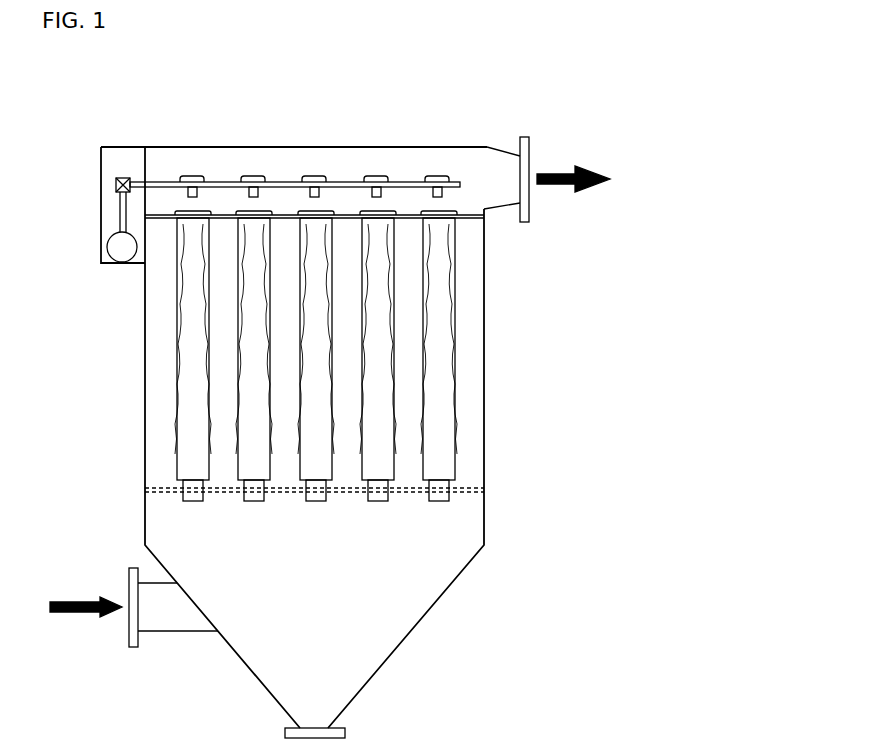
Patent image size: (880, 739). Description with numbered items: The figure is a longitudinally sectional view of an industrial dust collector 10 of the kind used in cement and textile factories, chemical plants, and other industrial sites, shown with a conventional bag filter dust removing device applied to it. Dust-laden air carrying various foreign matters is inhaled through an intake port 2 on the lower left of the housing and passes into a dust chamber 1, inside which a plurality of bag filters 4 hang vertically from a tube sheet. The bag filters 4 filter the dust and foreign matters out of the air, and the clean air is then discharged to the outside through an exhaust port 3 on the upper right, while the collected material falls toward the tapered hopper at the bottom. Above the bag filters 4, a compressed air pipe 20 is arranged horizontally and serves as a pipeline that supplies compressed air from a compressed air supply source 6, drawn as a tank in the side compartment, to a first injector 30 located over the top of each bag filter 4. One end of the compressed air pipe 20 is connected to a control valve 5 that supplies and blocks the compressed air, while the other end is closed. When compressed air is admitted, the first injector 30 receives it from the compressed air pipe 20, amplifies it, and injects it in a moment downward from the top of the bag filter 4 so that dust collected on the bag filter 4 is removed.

The dust collector 10 is at (404, 133).
The dust chamber 1 is at (470, 523).
The intake port 2 is at (128, 590).
The exhaust port 3 is at (530, 190).
The bag filter 4 is at (443, 352).
The control valve 5 is at (116, 186).
The compressed air supply source 6 is at (117, 253).
The compressed air pipe 20 is at (221, 182).
The first injector 30 is at (305, 177).